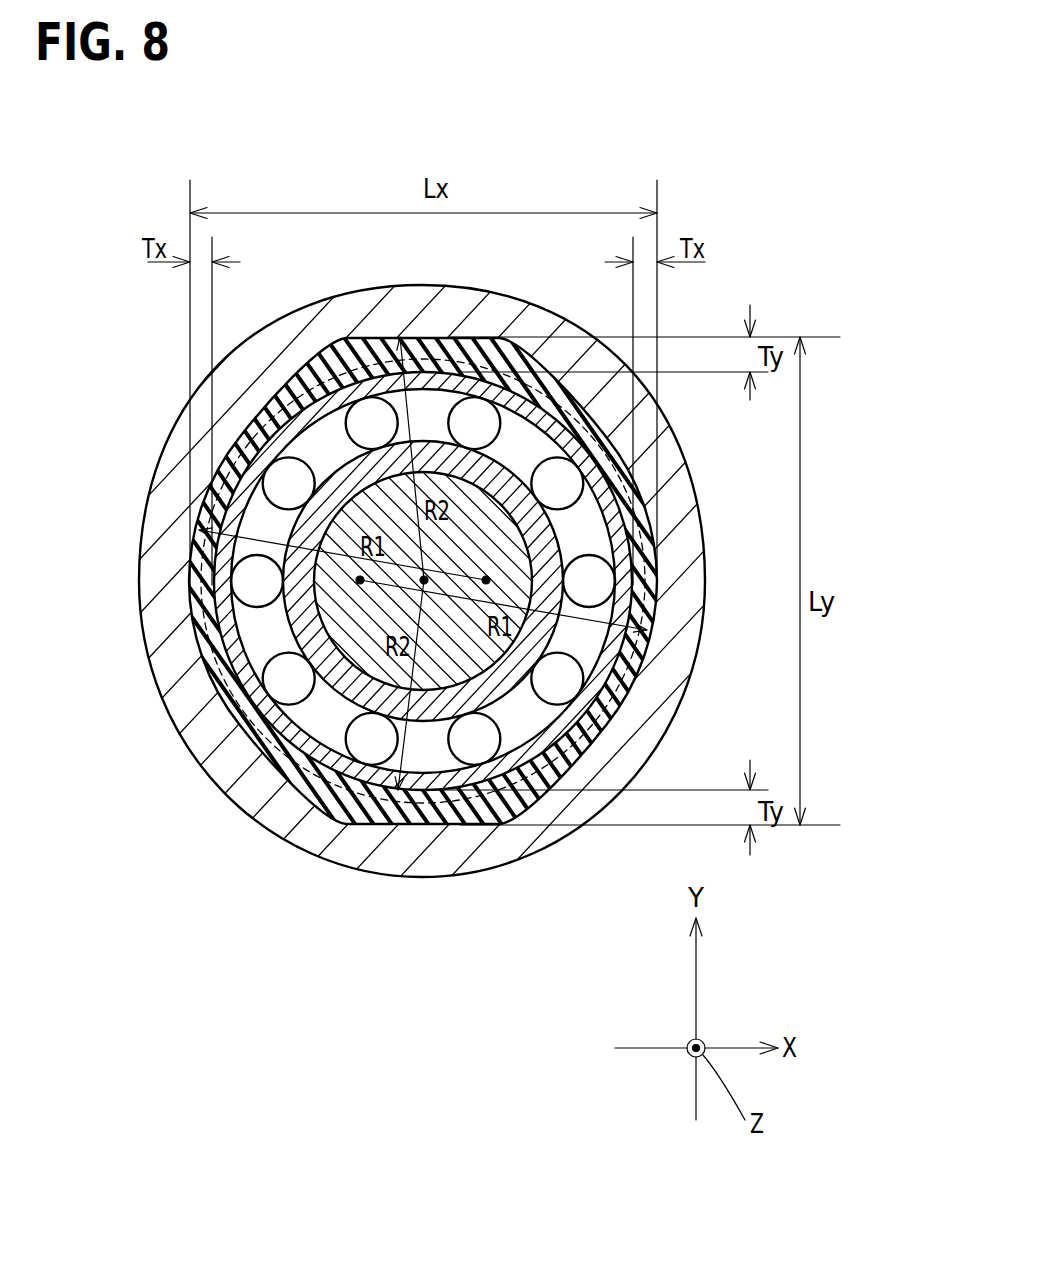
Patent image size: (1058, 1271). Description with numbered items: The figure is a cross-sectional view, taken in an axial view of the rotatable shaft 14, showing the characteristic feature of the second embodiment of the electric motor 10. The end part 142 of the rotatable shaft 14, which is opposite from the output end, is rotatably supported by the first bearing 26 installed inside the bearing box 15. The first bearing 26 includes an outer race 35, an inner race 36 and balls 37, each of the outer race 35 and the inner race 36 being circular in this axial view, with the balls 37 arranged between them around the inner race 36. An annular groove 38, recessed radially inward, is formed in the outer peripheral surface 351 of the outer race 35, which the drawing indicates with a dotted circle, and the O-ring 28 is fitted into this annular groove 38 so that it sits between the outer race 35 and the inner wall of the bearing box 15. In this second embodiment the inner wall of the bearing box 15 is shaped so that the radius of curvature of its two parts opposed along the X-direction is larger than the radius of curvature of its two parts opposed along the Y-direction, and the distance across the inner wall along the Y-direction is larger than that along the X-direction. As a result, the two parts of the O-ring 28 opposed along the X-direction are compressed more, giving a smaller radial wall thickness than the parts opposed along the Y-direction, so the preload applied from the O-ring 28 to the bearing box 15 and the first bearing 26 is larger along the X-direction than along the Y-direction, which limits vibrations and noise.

The motor 10 is at (127, 338).
The rotatable shaft 14 is at (526, 581).
The end part 142 is at (487, 545).
The bearing box 15 is at (192, 733).
The first bearing 26 is at (423, 629).
The O-ring 28 is at (328, 758).
The outer race 35 is at (325, 763).
The outer peripheral surface 351 is at (203, 667).
The inner race 36 is at (368, 695).
The balls 37 is at (378, 750).
The annular groove 38 is at (190, 587).